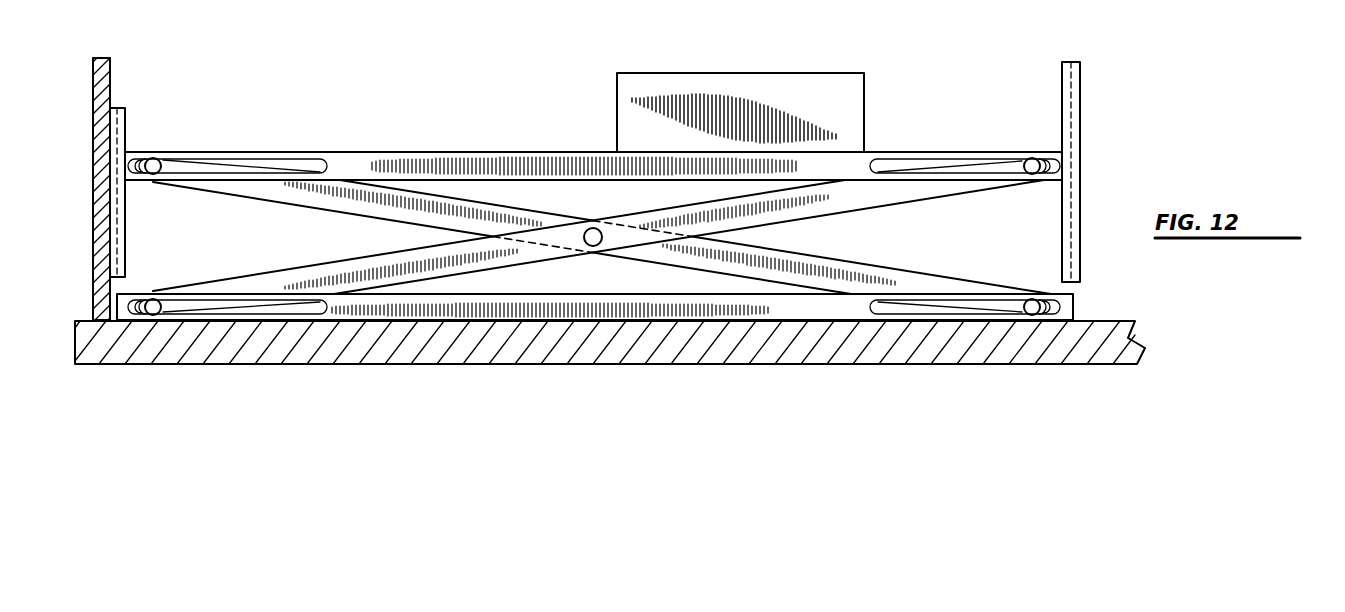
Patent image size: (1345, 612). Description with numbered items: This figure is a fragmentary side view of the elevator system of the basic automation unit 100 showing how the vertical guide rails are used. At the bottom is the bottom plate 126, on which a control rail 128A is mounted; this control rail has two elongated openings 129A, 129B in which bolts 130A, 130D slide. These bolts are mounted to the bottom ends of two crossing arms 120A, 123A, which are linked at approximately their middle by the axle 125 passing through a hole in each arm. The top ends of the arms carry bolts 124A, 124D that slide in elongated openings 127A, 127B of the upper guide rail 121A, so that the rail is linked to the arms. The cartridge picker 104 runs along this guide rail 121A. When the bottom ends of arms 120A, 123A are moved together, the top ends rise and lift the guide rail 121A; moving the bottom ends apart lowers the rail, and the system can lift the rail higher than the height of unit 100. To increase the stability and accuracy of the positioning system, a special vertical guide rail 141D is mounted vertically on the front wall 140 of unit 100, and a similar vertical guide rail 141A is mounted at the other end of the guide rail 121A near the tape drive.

The basic automation unit 100 is at (92, 188).
The cartridge picker 104 is at (800, 90).
The arm 120A is at (793, 262).
The guide rail 121A is at (563, 155).
The arm 123A is at (385, 262).
The bolt 124A is at (1031, 158).
The bolt 124D is at (156, 158).
The axle 125 is at (606, 210).
The bottom plate 126 is at (780, 343).
The elongated opening 127A is at (886, 163).
The elongated opening 127B is at (298, 162).
The control rail 128A is at (638, 302).
The elongated opening 129A is at (893, 312).
The elongated opening 129B is at (297, 313).
The bolt 130A is at (1034, 315).
The bolt 130D is at (160, 300).
The front wall 140 is at (97, 97).
The vertical guide rail 141A is at (1068, 107).
The vertical guide rail 141D is at (118, 110).